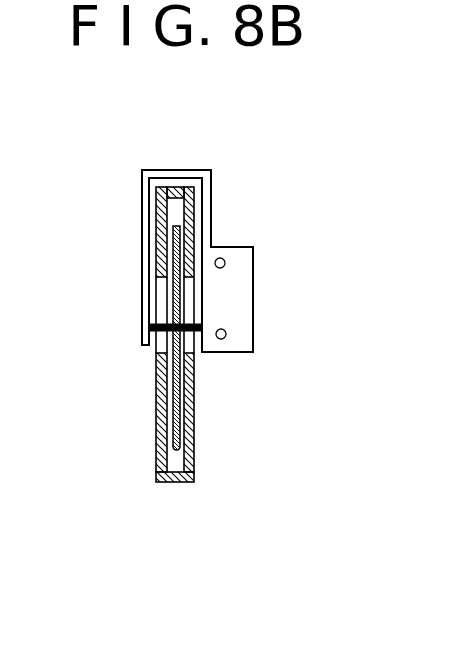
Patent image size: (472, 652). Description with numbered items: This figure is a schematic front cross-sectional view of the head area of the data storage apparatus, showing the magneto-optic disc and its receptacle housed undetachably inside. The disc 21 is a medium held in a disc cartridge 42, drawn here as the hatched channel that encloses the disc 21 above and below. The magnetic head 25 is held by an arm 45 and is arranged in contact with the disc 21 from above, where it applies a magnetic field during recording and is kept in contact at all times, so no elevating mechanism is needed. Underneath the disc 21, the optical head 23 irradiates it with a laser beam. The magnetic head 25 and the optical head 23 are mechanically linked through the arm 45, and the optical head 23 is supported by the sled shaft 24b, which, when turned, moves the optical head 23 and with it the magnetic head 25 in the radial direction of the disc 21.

The arm 45 is at (141, 227).
The optical head 23 is at (235, 298).
The sled shaft 24b is at (224, 258).
The disc cartridge 42 is at (175, 483).
The magnetic head 25 is at (168, 336).
The disc 21 is at (184, 437).